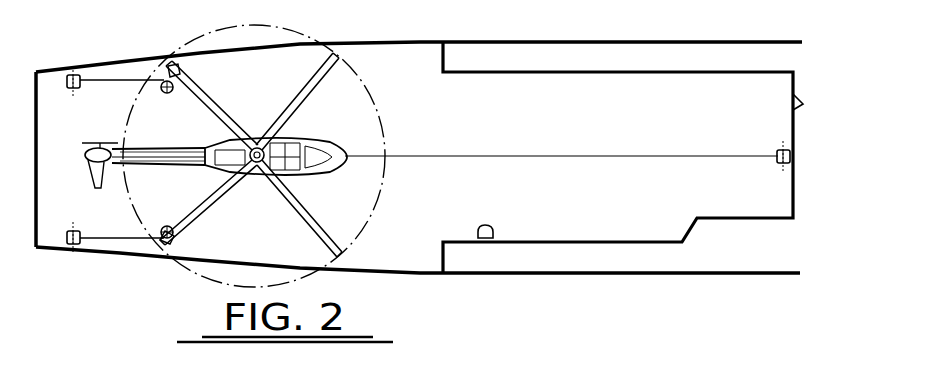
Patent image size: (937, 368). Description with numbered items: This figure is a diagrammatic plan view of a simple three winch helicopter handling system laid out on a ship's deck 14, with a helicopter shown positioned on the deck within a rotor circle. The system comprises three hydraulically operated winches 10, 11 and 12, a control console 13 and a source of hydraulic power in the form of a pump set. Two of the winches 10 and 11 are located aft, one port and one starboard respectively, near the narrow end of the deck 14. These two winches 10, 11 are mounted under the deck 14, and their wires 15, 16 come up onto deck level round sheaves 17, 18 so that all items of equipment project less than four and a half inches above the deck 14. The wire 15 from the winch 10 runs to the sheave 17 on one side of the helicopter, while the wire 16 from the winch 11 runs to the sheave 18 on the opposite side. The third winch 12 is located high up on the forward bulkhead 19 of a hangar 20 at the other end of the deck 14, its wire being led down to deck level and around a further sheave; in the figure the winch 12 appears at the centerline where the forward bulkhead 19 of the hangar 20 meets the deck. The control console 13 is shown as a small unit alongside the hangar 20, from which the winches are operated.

The winch 10 is at (72, 74).
The winch 11 is at (77, 245).
The winch 12 is at (780, 161).
The control console 13 is at (493, 230).
The deck 14 is at (414, 121).
The wire 15 is at (128, 79).
The wire 16 is at (107, 242).
The sheave 17 is at (166, 66).
The sheave 18 is at (166, 244).
The forward bulkhead 19 is at (792, 105).
The hangar 20 is at (610, 72).